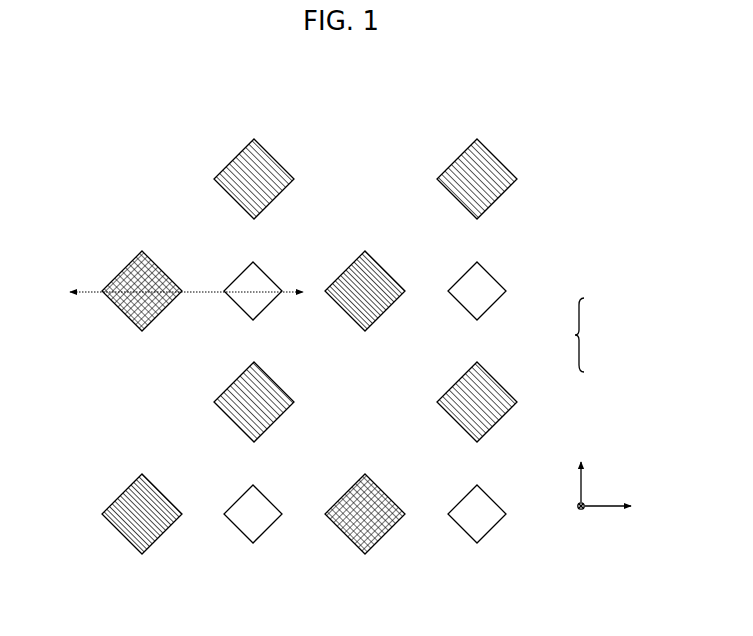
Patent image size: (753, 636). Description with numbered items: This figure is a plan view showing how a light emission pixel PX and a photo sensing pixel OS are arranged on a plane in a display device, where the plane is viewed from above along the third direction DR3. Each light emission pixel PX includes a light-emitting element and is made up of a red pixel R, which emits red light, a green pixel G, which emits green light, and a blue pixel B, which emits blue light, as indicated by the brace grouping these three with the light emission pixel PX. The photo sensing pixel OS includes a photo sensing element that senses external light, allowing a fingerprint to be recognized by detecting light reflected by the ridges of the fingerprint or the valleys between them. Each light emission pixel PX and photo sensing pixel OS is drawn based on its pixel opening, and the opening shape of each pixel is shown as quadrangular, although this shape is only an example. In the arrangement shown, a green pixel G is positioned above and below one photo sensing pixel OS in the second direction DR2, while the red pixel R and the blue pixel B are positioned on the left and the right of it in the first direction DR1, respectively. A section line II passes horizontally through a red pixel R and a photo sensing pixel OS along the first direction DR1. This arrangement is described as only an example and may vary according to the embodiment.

The green pixel G is at (267, 150).
The red pixel R is at (152, 258).
The blue pixel B is at (372, 258).
The photo sensing pixel OS is at (262, 269).
The light emission pixel PX is at (576, 334).
The section line II-II' II is at (188, 292).
The first direction DR1 is at (625, 506).
The second direction DR2 is at (584, 467).
The third direction DR3 is at (570, 521).